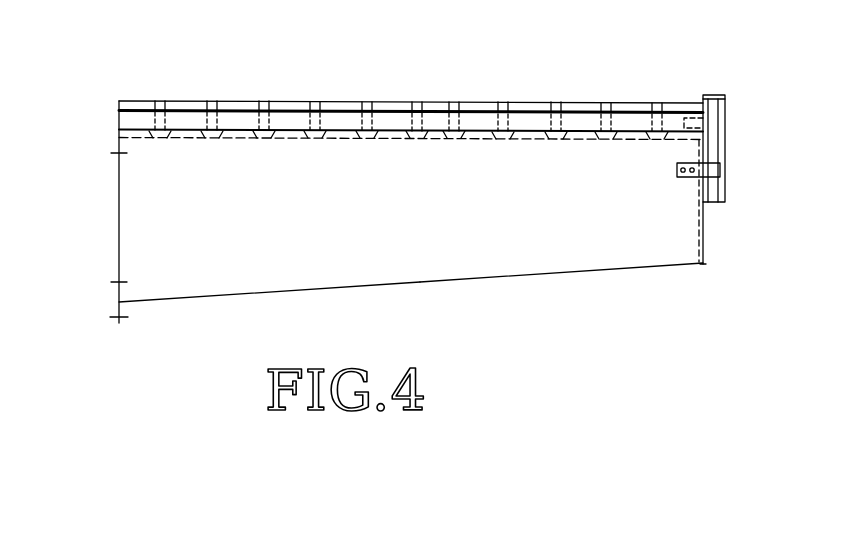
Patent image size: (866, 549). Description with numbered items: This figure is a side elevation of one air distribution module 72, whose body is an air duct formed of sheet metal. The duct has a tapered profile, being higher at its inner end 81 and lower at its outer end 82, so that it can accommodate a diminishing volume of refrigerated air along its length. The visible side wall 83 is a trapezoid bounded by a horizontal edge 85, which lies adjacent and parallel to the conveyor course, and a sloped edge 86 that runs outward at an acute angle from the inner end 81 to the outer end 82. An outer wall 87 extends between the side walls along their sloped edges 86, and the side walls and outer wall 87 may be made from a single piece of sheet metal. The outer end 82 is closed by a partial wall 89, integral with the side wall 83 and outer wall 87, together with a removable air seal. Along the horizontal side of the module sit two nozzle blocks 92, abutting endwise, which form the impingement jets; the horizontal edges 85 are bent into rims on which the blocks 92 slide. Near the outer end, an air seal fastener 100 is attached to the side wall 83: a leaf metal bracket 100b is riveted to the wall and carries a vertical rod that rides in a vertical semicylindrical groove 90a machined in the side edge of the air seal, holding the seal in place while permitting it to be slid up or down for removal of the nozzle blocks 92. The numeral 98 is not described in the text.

The air distribution module 72 is at (763, 155).
The inner end 81 is at (118, 197).
The outer end 82 is at (705, 236).
The side wall 83 is at (370, 219).
The horizontal edge 85 is at (472, 140).
The sloped edge 86 is at (340, 290).
The outer wall 87 is at (480, 278).
The partial wall 89 is at (702, 205).
The vertical semicylindrical groove 90a is at (715, 143).
The nozzle block 92 is at (287, 103).
The end post bracket 98 is at (162, 100).
The air seal fastener 100 is at (674, 190).
The leaf metal bracket 100b is at (680, 163).